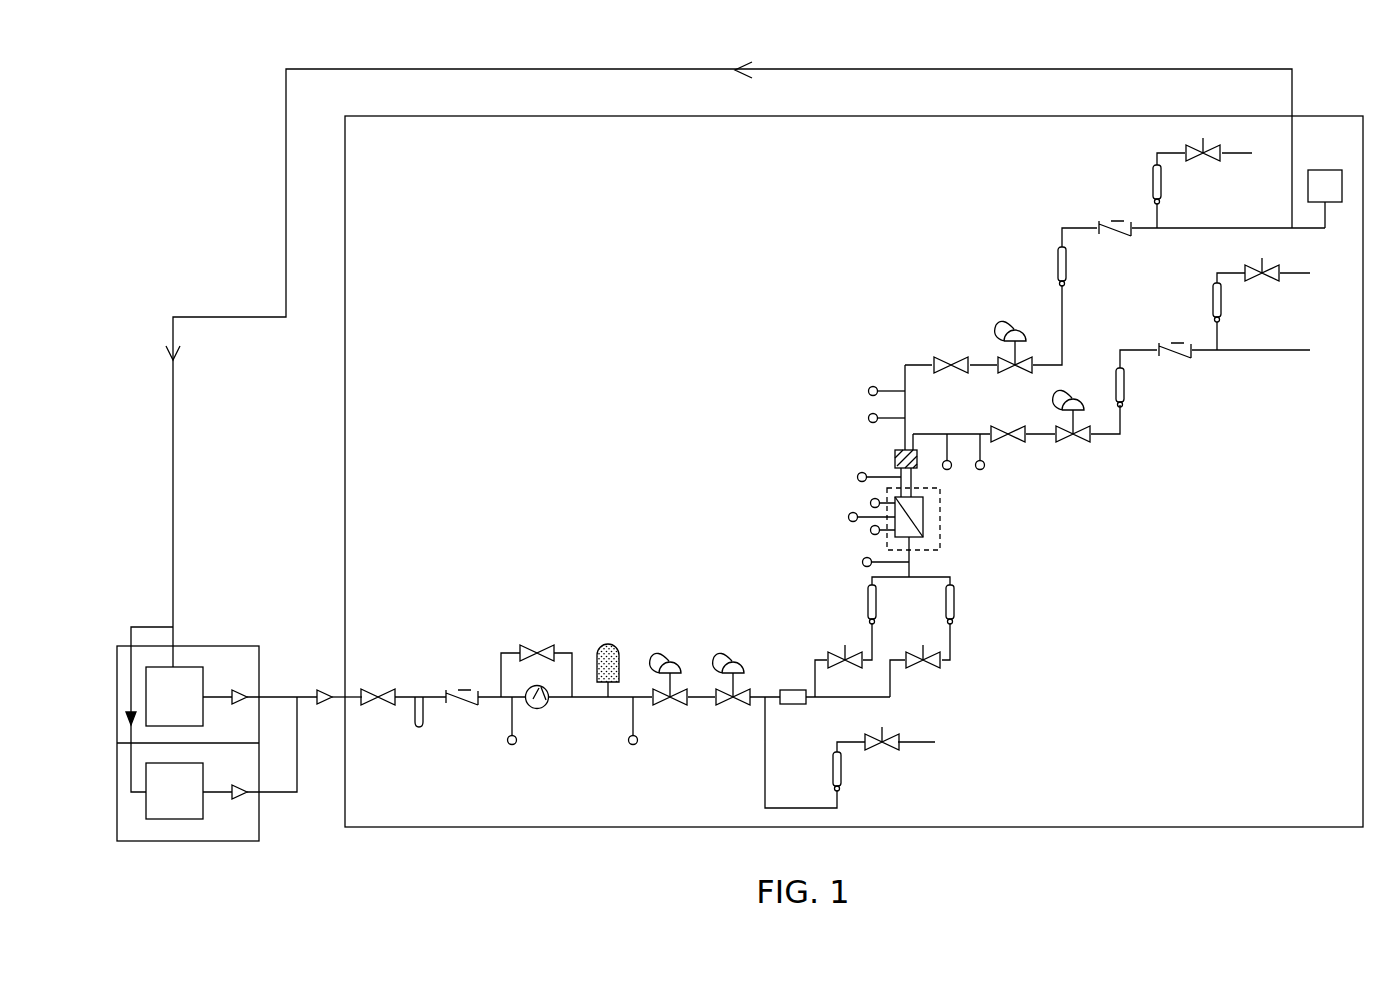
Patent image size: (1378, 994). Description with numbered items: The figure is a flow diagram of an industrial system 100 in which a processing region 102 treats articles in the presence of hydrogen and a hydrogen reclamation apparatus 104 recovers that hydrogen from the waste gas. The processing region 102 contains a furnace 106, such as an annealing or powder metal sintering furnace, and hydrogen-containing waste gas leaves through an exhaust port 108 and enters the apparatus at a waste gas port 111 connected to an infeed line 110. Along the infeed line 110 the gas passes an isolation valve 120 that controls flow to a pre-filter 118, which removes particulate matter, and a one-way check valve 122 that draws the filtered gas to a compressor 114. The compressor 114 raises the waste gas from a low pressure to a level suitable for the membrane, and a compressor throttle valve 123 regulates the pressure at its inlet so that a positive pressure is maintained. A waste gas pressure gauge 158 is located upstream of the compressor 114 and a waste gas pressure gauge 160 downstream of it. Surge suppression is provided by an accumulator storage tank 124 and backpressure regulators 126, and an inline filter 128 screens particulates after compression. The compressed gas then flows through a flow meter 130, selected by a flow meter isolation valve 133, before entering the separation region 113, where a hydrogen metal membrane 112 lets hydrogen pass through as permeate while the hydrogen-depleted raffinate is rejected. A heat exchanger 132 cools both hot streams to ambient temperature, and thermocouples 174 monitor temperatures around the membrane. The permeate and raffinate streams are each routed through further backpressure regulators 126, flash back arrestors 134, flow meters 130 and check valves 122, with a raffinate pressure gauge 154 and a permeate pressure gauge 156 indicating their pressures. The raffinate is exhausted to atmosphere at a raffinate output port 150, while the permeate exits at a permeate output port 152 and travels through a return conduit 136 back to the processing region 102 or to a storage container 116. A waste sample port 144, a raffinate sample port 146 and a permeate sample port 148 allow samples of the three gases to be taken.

The industrial system 100 is at (240, 79).
The processing region 102 is at (138, 660).
The hydrogen reclamation apparatus 104 is at (683, 805).
The furnace 106 is at (180, 692).
The exhaust port 108 is at (244, 693).
The infeed line 110 is at (305, 700).
The waste gas port 111 is at (320, 688).
The hydrogen metal membrane 112 is at (912, 522).
The separation region 113 is at (940, 518).
The compressor 114 is at (544, 706).
The storage container 116 is at (1327, 182).
The pre-filter 118 is at (419, 728).
The isolation valve 120 is at (378, 686).
The one-way check valve 122 is at (455, 690).
The compressor throttle valve 123 is at (537, 647).
The accumulator storage tank 124 is at (606, 642).
The backpressure regulator 126 is at (730, 662).
The inline filter 128 is at (796, 705).
The flow meter 130 is at (842, 772).
The heat exchanger 132 is at (895, 455).
The flow meter isolation valve 133 is at (838, 652).
The flash back arrestor 134 is at (951, 360).
The return conduit 136 is at (818, 70).
The waste sample port 144 is at (913, 742).
The raffinate sample port 146 is at (1298, 275).
The permeate sample port 148 is at (1233, 155).
The raffinate output port 150 is at (1281, 353).
The permeate output port 152 is at (1252, 230).
The raffinate pressure gauge 154 is at (950, 470).
The permeate pressure gauge 156 is at (868, 391).
The waste gas pressure gauge 158 is at (511, 746).
The waste gas pressure gauge 160 is at (632, 746).
The thermocouple 174 is at (868, 418).